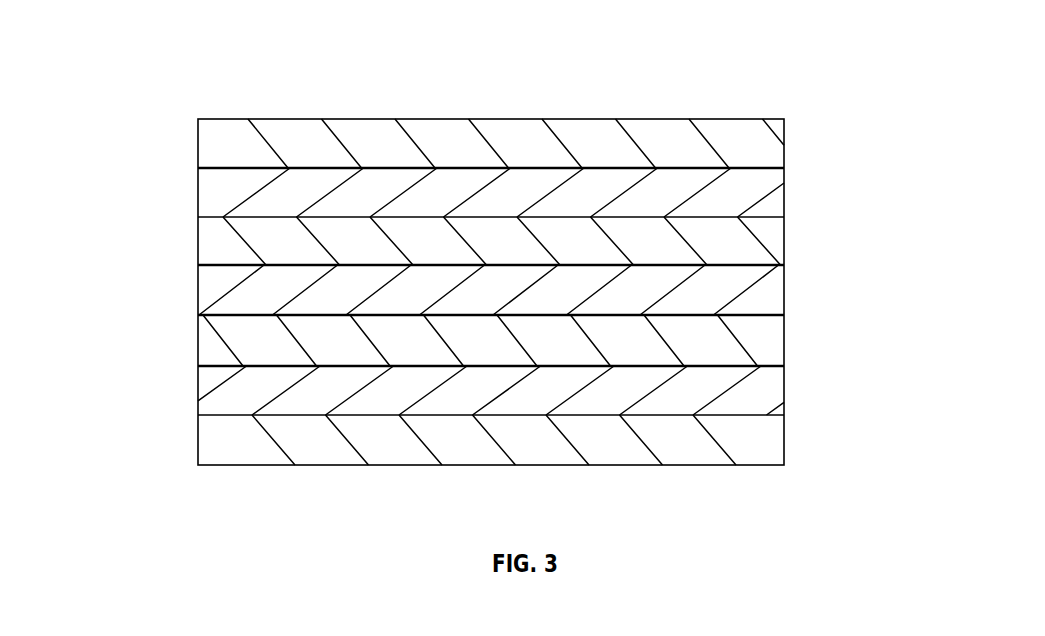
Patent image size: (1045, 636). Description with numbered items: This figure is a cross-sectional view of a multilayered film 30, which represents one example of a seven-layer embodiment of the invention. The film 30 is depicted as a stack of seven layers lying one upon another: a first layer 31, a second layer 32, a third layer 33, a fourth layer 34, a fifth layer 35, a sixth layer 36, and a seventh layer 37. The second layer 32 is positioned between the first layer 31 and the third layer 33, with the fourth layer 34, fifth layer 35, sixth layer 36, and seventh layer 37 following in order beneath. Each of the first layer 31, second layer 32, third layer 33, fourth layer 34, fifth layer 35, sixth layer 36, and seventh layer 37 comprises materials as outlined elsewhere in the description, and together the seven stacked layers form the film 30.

The film 30 is at (467, 70).
The first layer 31 is at (807, 143).
The second layer 32 is at (178, 195).
The third layer 33 is at (803, 242).
The fourth layer 34 is at (175, 294).
The fifth layer 35 is at (807, 340).
The sixth layer 36 is at (173, 397).
The seventh layer 37 is at (808, 438).